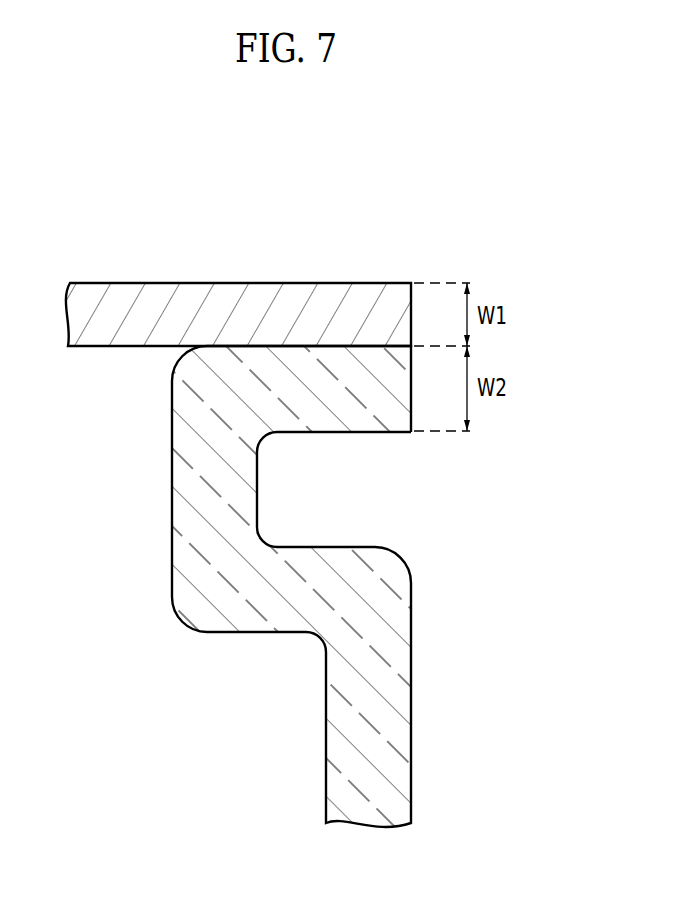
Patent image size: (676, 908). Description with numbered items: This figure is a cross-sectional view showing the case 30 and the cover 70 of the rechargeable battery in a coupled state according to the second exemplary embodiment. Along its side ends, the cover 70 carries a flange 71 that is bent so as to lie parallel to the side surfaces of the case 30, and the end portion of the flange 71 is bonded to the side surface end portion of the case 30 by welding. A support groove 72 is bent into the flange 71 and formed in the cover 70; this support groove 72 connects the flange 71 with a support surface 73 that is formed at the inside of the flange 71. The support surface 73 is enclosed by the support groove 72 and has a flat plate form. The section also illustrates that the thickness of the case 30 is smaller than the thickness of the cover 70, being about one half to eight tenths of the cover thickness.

The case 30 is at (302, 304).
The cover 70 is at (438, 603).
The flange 71 is at (371, 368).
The support groove 72 is at (257, 488).
The support surface 73 is at (411, 715).